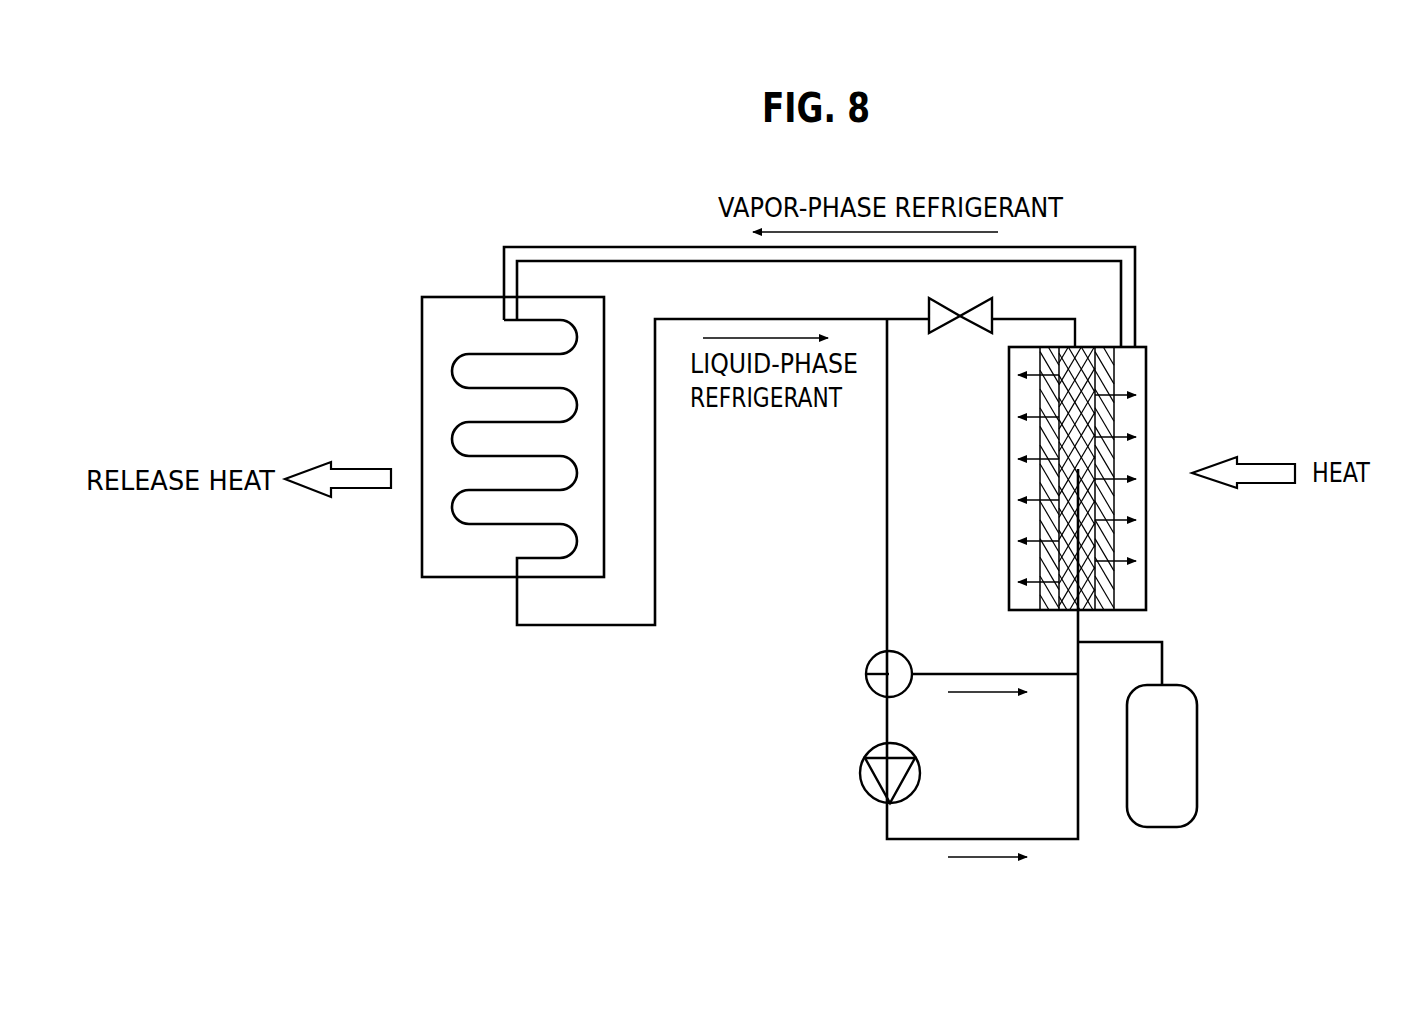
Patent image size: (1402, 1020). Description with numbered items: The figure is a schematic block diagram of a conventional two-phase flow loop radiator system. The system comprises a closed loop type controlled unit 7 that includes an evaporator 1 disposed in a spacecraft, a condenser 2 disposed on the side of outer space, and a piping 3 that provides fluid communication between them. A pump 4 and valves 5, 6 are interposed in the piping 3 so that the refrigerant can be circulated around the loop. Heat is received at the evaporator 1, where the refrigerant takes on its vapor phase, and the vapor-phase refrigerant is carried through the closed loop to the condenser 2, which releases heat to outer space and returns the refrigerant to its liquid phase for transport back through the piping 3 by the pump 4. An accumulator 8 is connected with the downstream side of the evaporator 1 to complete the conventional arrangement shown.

The evaporator 1 is at (1146, 375).
The condenser 2 is at (421, 351).
The piping 3 is at (887, 503).
The pump 4 is at (870, 786).
The valve 5 is at (938, 323).
The valve 6 is at (877, 662).
The closed loop type controlled unit 7 is at (634, 240).
The accumulator 8 is at (1172, 743).